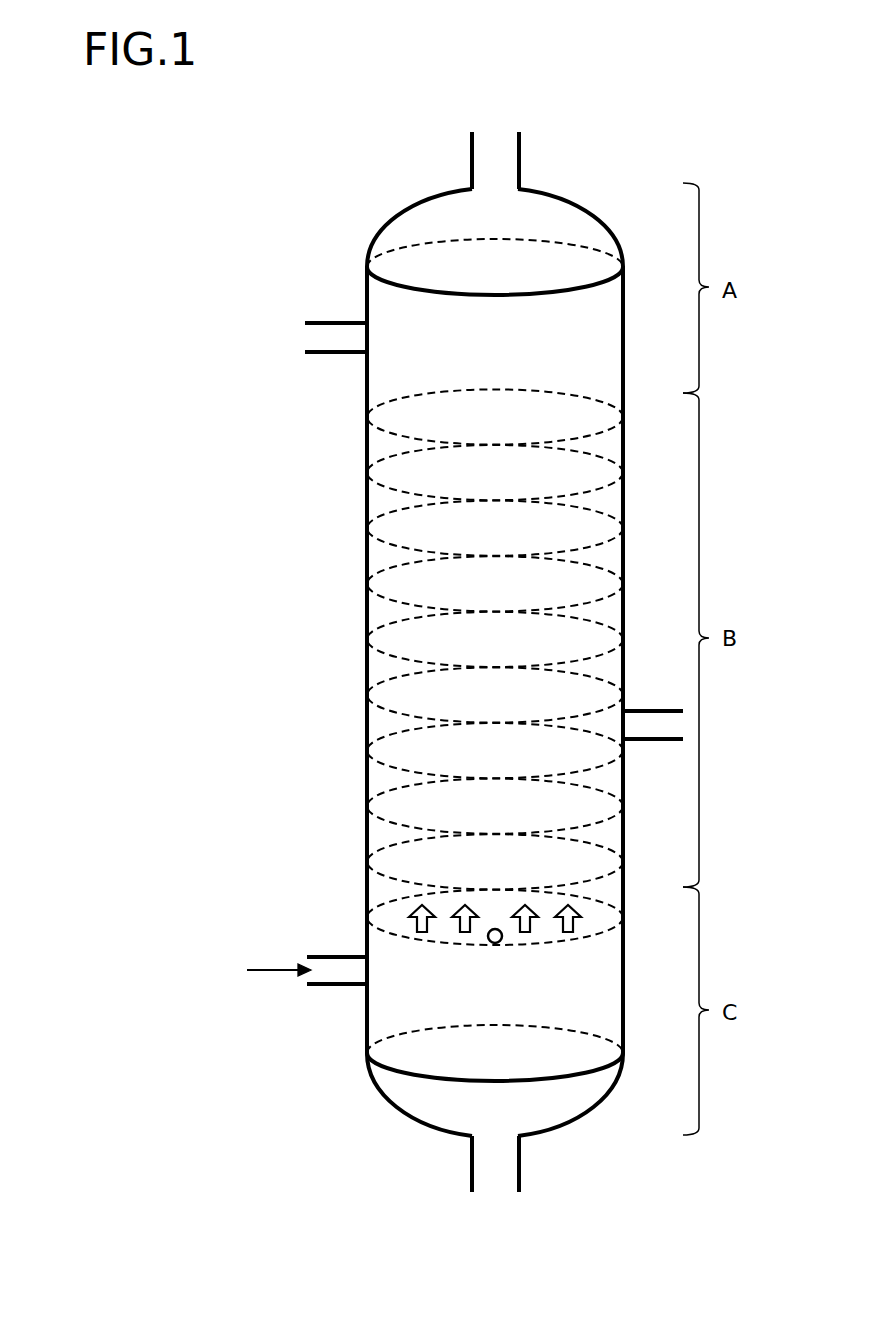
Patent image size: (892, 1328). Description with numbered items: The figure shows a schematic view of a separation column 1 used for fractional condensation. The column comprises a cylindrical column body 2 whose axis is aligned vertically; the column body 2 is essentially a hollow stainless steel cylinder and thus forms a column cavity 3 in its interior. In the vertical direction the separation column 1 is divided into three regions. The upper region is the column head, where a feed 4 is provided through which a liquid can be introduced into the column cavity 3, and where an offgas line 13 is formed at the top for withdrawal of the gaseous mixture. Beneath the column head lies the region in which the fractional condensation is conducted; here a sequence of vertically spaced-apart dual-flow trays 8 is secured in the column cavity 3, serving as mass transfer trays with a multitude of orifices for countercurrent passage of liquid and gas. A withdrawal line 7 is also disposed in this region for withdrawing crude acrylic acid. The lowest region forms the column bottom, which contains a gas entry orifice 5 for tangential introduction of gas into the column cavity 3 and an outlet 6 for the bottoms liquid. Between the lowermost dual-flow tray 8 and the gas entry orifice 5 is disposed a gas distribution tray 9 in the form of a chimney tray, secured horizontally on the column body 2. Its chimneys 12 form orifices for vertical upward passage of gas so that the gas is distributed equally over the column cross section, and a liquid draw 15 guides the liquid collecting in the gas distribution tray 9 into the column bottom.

The separation column 1 is at (381, 210).
The column body 2 is at (430, 639).
The column cavity 3 is at (512, 345).
The feed 4 is at (318, 340).
The gas entry orifice 5 is at (322, 985).
The outlet 6 is at (493, 1182).
The withdrawal line 7 is at (660, 740).
The dual-flow trays 8 is at (398, 435).
The gas distribution tray 9 is at (387, 936).
The chimneys 12 is at (412, 913).
The offgas line 13 is at (488, 140).
The liquid draw 15 is at (502, 943).